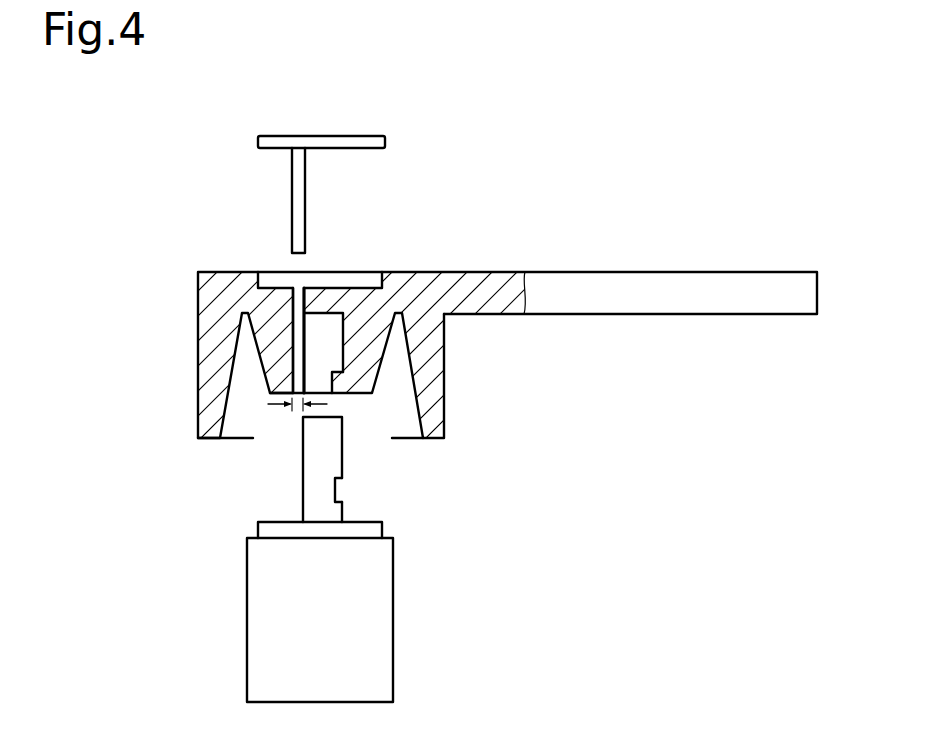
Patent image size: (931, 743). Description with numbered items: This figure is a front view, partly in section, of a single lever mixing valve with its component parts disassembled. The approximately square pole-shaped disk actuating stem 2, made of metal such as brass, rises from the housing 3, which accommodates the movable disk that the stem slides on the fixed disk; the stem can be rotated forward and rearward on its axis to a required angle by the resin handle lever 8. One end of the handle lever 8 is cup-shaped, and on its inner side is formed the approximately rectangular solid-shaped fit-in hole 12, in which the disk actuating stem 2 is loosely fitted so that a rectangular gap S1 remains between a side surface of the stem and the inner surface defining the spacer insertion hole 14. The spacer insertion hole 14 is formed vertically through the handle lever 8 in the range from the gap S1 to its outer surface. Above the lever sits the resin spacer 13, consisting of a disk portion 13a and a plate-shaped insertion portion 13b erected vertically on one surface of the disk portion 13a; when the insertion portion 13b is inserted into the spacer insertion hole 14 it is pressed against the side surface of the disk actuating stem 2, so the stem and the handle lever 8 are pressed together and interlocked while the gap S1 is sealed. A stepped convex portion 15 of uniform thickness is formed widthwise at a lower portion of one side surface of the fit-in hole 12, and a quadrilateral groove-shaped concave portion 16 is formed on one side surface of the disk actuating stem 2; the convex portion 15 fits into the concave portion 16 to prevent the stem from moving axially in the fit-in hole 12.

The disk actuating stem 2 is at (335, 445).
The housing 3 is at (373, 628).
The handle lever 8 is at (672, 287).
The fit-in hole 12 is at (342, 324).
The spacer 13 is at (306, 159).
The disk portion 13a is at (333, 138).
The insertion portion 13b is at (297, 190).
The spacer insertion hole 14 is at (296, 304).
The stepped convex portion 15 is at (333, 364).
The groove-shaped concave portion 16 is at (337, 482).
The gap S1 is at (297, 415).